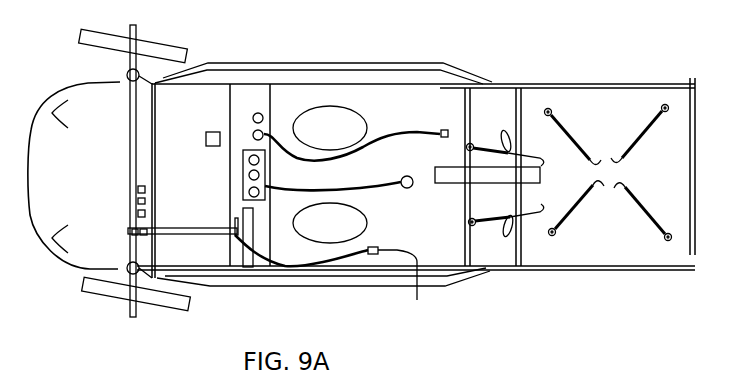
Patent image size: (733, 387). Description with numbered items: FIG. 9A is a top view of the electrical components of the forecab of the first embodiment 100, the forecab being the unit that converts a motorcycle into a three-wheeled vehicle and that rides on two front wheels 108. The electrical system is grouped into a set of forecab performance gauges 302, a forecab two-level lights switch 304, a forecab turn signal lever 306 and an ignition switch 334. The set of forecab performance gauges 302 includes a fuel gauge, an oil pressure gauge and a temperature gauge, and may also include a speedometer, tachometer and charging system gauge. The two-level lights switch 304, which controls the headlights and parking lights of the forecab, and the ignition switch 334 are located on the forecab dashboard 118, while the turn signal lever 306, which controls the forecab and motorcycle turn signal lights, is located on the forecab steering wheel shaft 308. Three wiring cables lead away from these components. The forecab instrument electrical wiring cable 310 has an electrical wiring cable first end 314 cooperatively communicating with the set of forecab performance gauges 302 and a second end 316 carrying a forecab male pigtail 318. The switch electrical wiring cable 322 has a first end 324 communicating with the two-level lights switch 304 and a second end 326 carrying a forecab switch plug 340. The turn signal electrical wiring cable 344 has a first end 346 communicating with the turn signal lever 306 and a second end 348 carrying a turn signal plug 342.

The first embodiment 100 is at (130, 331).
The front wheels 108 is at (158, 114).
The forecab dashboard 118 is at (258, 114).
The set of forecab performance gauges 302 is at (322, 184).
The forecab two-level lights switch 304 is at (253, 134).
The forecab turn signal lever 306 is at (233, 216).
The forecab steering wheel shaft 308 is at (162, 226).
The forecab instrument electrical wiring cable 310 is at (430, 162).
The electrical wiring cable first end 314 is at (222, 242).
The forecab electrical wiring cable second end 316 is at (402, 189).
The forecab male pigtail 318 is at (451, 212).
The switch electrical wiring cable 322 is at (417, 105).
The forecab switch electrical wiring cable first end 324 is at (328, 109).
The forecab switch electrical wiring cable second end 326 is at (460, 115).
The ignition switch 334 is at (253, 117).
The forecab switch plug 340 is at (449, 134).
The turn signal plug 342 is at (406, 286).
The turn signal electrical wiring cable 344 is at (285, 263).
The turn signal electrical wiring cable first end 346 is at (235, 235).
The turn signal electrical wiring cable second end 348 is at (366, 255).